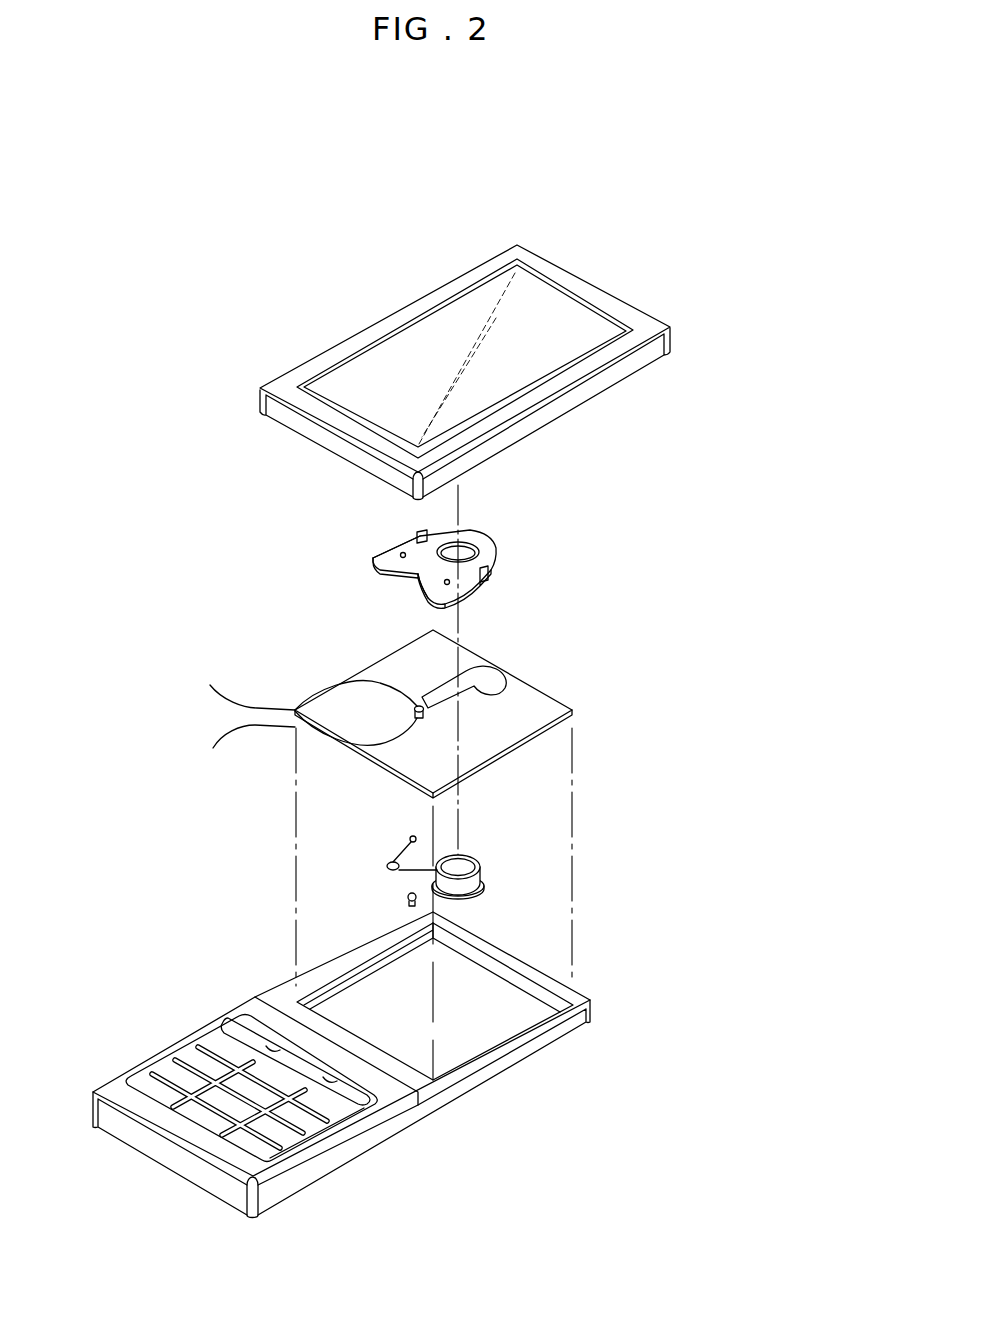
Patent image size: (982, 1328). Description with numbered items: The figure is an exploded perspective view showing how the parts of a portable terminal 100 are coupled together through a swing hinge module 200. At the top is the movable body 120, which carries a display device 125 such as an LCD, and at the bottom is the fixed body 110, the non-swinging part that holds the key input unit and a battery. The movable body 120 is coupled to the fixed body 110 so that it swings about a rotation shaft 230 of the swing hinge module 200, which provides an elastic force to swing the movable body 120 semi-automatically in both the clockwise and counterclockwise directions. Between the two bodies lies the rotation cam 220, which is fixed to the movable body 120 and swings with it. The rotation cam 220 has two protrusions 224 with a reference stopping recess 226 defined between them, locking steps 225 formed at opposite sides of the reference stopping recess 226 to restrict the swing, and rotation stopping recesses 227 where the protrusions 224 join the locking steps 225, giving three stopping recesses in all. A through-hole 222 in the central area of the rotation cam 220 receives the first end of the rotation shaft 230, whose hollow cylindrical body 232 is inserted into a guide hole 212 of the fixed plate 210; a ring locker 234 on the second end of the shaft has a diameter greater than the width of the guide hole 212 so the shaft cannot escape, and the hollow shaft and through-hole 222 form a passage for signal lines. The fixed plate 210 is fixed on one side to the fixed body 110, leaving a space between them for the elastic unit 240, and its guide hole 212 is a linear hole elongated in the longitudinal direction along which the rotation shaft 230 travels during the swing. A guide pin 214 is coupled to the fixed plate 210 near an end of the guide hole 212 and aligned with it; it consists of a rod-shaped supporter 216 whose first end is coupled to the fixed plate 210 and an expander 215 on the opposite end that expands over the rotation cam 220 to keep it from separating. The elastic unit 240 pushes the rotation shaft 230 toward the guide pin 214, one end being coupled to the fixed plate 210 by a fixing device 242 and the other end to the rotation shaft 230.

The portable terminal 100 is at (700, 179).
The fixed body 110 is at (357, 1161).
The movable body 120 is at (343, 335).
The display device 125 is at (444, 318).
The swing hinge module 200 is at (112, 648).
The fixed plate 210 is at (563, 700).
The guide hole 212 is at (481, 691).
The guide pin 214 is at (182, 668).
The expander 215 is at (242, 682).
The supporter 216 is at (243, 754).
The rotation cam 220 is at (500, 567).
The through-hole 222 is at (474, 535).
The protrusions 224 is at (380, 571).
The locking steps 225 is at (466, 550).
The reference stopping recess 226 is at (414, 590).
The rotation stopping recesses 227 is at (419, 532).
The rotation shaft 230 is at (655, 857).
The hollow cylindrical body 232 is at (480, 867).
The ring locker 234 is at (484, 886).
The elastic unit 240 is at (390, 842).
The fixing device 242 is at (400, 899).